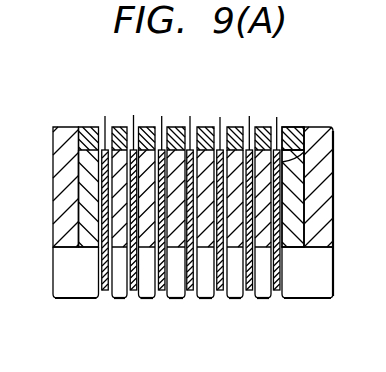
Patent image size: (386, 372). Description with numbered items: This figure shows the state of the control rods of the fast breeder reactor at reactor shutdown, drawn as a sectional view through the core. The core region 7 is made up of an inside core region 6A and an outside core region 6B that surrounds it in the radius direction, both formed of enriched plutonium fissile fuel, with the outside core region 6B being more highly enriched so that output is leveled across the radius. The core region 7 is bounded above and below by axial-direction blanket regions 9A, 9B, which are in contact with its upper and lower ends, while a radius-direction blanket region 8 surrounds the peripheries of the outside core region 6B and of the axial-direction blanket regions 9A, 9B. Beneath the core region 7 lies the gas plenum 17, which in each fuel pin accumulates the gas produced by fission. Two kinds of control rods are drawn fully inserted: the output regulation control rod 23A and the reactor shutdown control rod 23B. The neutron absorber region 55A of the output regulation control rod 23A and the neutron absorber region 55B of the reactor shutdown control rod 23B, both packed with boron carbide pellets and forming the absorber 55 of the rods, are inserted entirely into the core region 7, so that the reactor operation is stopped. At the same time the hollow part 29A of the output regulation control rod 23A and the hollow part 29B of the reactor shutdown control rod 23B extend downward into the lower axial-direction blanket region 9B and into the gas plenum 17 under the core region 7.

The core region 7 is at (80, 197).
The radius-direction blanket region 8 is at (55, 147).
The axial-direction blanket region 9A is at (92, 127).
The axial-direction blanket region 9B is at (308, 233).
The inside core region 6A is at (142, 132).
The outside core region 6B is at (298, 193).
The neutron absorber region 55A is at (305, 141).
The neutron absorber region 55B is at (233, 127).
The protective layer 55 is at (334, 162).
The gas plenum 17 is at (322, 268).
The output regulation control rod 23A is at (107, 291).
The reactor shutdown control rod 23B is at (162, 291).
The hollow part 29A is at (105, 259).
The hollow part 29B is at (162, 258).